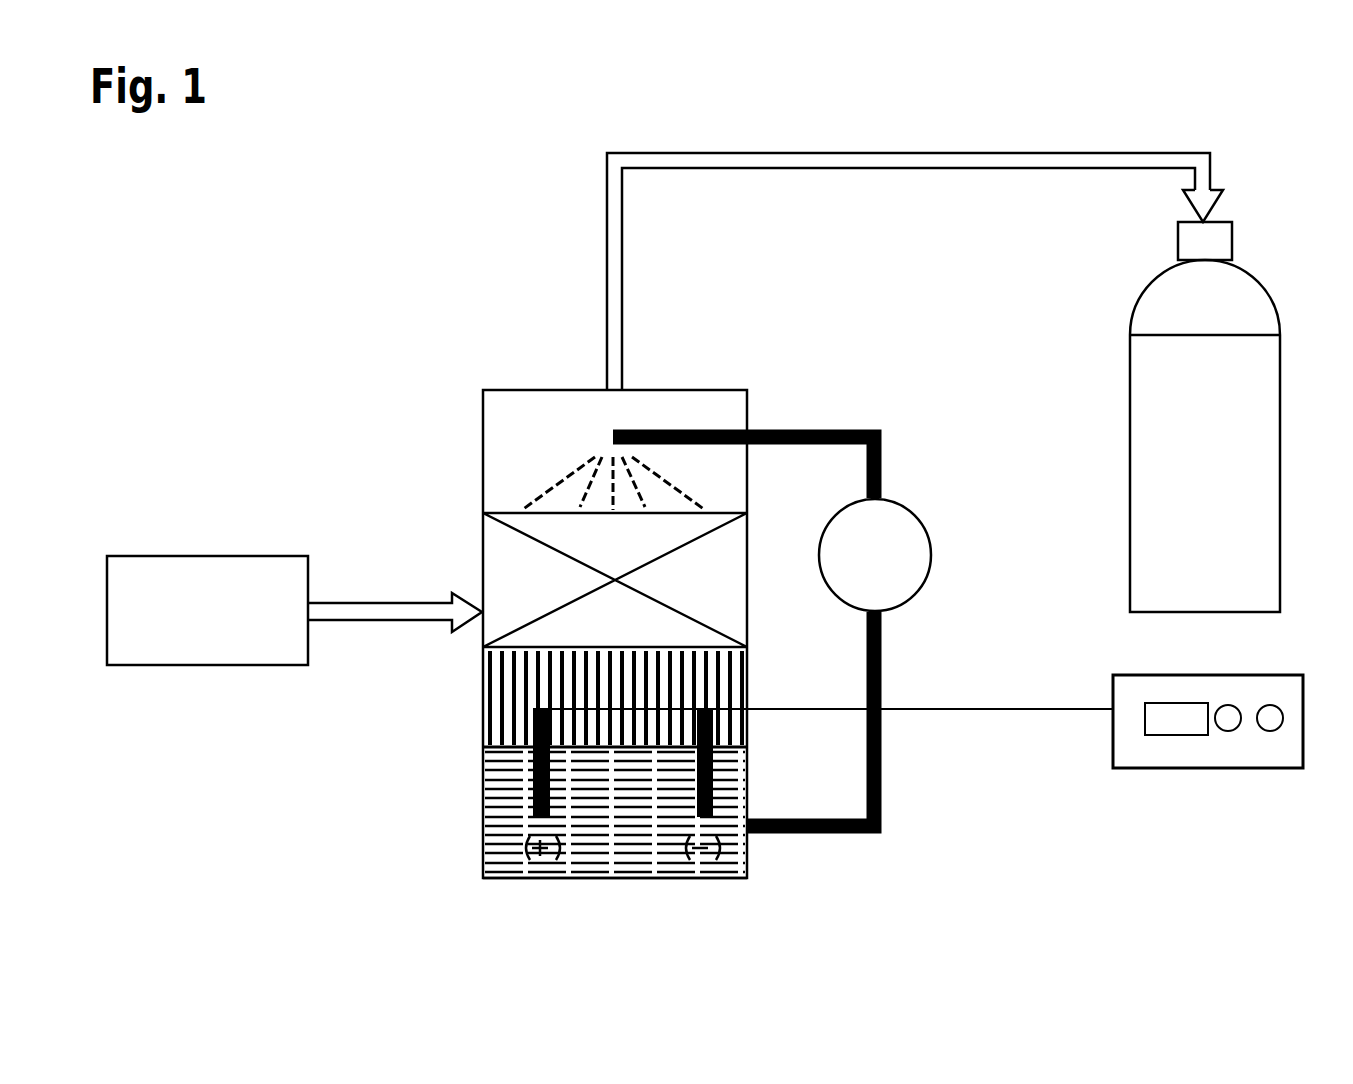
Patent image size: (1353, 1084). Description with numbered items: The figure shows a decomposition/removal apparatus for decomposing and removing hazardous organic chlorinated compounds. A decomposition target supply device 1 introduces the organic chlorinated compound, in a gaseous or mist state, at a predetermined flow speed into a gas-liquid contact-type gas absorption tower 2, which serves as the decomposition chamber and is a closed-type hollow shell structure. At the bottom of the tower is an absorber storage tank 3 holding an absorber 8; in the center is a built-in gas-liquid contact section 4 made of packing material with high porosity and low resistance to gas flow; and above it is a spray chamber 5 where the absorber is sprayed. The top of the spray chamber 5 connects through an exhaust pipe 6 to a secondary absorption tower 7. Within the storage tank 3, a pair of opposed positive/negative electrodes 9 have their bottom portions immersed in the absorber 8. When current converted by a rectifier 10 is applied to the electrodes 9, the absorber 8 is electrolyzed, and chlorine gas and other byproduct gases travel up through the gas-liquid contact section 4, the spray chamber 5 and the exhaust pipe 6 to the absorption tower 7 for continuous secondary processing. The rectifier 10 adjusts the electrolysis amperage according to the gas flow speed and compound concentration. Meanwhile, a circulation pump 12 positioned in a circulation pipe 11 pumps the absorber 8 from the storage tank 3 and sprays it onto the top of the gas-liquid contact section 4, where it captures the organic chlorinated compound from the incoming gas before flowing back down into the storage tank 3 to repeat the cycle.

The decomposition target supply device 1 is at (197, 657).
The gas-liquid contact-type gas absorption tower 2 is at (503, 383).
The absorber storage tank 3 is at (480, 837).
The gas-liquid contact section 4 is at (483, 555).
The spray chamber 5 is at (535, 433).
The exhaust pipe 6 is at (840, 158).
The absorption tower 7 is at (1148, 418).
The absorber 8 is at (617, 827).
The positive/negative electrodes 9 is at (500, 745).
The rectifier 10 is at (1203, 757).
The circulation pipe 11 is at (883, 668).
The circulation pump 12 is at (907, 553).